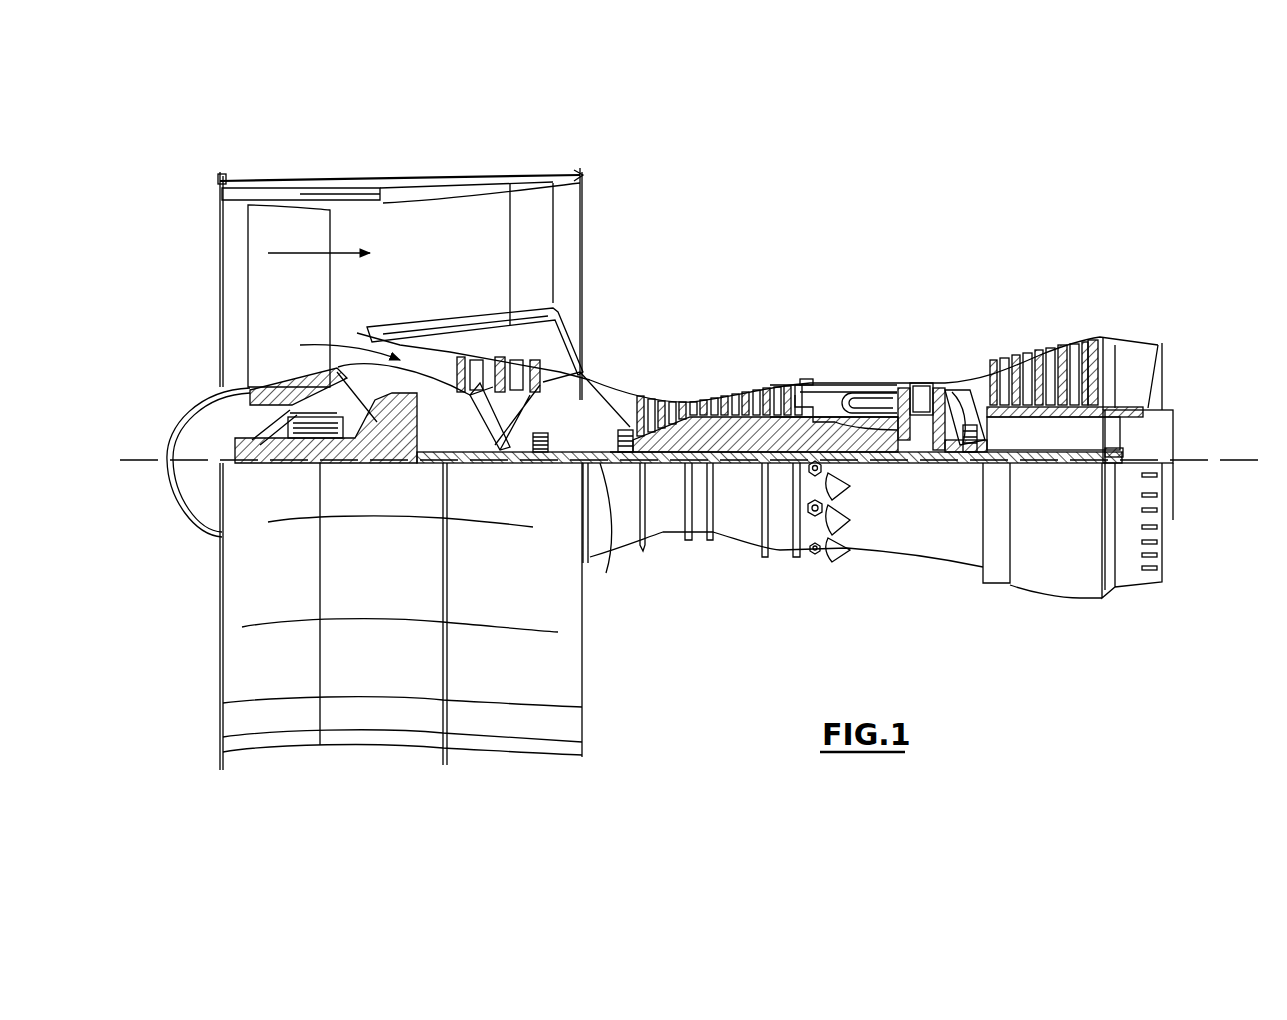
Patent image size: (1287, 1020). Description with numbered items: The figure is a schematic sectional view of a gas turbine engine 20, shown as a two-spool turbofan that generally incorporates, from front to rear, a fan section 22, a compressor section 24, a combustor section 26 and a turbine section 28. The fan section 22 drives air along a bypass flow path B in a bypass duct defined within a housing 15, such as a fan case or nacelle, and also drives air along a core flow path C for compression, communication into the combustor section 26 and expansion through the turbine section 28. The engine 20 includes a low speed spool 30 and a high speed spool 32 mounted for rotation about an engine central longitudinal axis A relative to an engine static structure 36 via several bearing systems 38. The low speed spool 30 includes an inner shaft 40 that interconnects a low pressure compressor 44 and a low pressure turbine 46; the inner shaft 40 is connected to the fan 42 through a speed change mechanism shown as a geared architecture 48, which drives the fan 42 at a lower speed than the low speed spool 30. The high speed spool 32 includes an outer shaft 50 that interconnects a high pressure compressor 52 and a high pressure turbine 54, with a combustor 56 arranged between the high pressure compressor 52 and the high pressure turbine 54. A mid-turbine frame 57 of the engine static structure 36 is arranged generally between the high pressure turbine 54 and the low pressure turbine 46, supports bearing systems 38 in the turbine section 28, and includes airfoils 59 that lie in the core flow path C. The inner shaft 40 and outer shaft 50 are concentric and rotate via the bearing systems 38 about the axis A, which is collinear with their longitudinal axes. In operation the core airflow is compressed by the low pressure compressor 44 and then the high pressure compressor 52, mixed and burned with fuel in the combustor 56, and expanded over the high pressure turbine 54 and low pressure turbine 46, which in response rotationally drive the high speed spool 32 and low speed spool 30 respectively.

The gas turbine engine 20 is at (860, 228).
The fan section 22 is at (332, 170).
The housing 15 is at (398, 178).
The compressor section 24 is at (632, 367).
The combustor section 26 is at (855, 358).
The turbine section 28 is at (1003, 320).
The low speed spool 30 is at (740, 466).
The high speed spool 32 is at (780, 430).
The engine static structure 36 is at (779, 553).
The bearing systems 38 is at (538, 460).
The inner shaft 40 is at (601, 465).
The fan 42 is at (305, 309).
The low pressure compressor 44 is at (480, 373).
The low pressure turbine 46 is at (1050, 355).
The geared architecture 48 is at (408, 445).
The outer shaft 50 is at (860, 440).
The high pressure compressor 52 is at (705, 402).
The high pressure turbine 54 is at (913, 385).
The combustor 56 is at (863, 397).
The mid-turbine frame 57 is at (950, 372).
The airfoils 59 is at (987, 425).
The engine central longitudinal axis A is at (1249, 460).
The bypass flow path B is at (302, 252).
The core flow path C is at (341, 348).